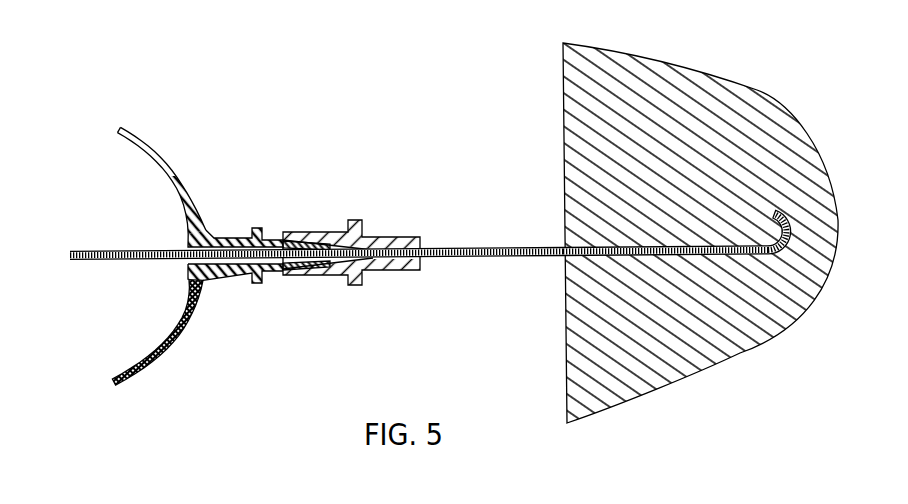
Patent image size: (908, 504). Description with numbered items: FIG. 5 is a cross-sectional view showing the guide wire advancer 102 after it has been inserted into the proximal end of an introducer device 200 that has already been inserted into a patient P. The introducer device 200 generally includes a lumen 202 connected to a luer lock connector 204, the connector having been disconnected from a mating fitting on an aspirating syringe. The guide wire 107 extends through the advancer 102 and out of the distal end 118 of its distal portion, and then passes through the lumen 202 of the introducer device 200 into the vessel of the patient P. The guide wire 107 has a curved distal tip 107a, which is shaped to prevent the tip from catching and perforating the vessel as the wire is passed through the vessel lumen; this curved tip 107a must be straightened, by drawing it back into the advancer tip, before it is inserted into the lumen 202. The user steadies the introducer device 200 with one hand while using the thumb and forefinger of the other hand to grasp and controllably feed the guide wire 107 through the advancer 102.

The patient P is at (589, 92).
The guide wire advancer 102 is at (182, 182).
The distal end 118 is at (232, 230).
The luer lock connector 204 is at (283, 269).
The introducer device 200 is at (379, 240).
The guide wire 107 is at (155, 260).
The lumen 202 is at (552, 245).
The distal tip 107a is at (788, 213).